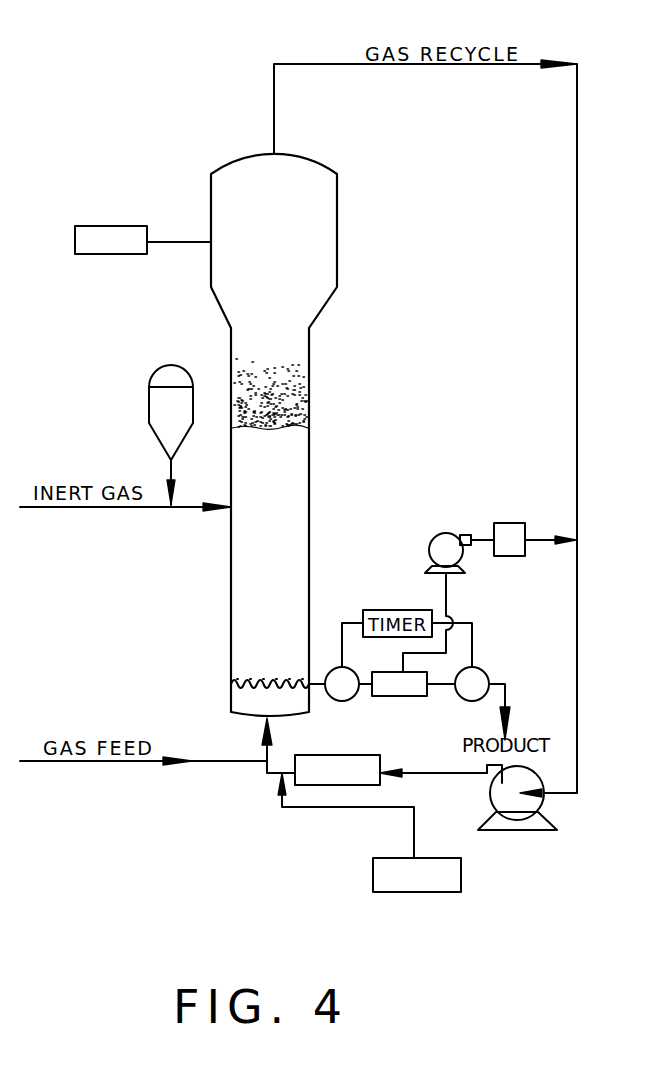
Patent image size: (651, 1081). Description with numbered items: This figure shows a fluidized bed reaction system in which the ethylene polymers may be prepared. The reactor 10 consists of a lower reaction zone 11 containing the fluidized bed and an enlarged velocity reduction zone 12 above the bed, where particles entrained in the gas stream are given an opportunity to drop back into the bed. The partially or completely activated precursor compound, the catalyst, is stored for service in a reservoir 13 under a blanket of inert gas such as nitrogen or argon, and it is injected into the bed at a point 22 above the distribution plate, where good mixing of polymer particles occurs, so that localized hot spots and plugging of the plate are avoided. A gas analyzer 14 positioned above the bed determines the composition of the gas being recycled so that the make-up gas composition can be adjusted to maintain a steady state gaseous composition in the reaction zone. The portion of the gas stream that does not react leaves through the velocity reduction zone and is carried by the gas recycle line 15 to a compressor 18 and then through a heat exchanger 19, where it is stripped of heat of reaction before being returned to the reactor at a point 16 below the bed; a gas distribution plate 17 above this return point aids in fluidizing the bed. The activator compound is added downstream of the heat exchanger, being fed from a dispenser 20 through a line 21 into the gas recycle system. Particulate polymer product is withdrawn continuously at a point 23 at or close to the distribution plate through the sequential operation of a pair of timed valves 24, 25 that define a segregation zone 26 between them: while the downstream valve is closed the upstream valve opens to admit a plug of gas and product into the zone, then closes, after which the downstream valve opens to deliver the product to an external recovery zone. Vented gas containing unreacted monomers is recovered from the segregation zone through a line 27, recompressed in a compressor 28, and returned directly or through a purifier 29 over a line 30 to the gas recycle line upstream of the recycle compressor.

The reactor 10 is at (296, 435).
The reaction zone 11 is at (305, 513).
The velocity reduction zone 12 is at (330, 260).
The reservoir 13 is at (157, 400).
The gas analyzer 14 is at (112, 245).
The gas recycle line 15 is at (575, 310).
The point 16 is at (257, 720).
The gas distribution plate 17 is at (265, 680).
The compressor 18 is at (540, 802).
The heat exchanger 19 is at (338, 755).
The dispenser 20 is at (373, 875).
The line 21 is at (417, 822).
The point 22 is at (228, 515).
The point 23 is at (318, 678).
The timed valve 24 is at (342, 701).
The timed valve 25 is at (492, 675).
The segregation zone 26 is at (388, 697).
The line 27 is at (448, 597).
The compressor 28 is at (435, 535).
The purifier 29 is at (510, 522).
The line 30 is at (540, 545).